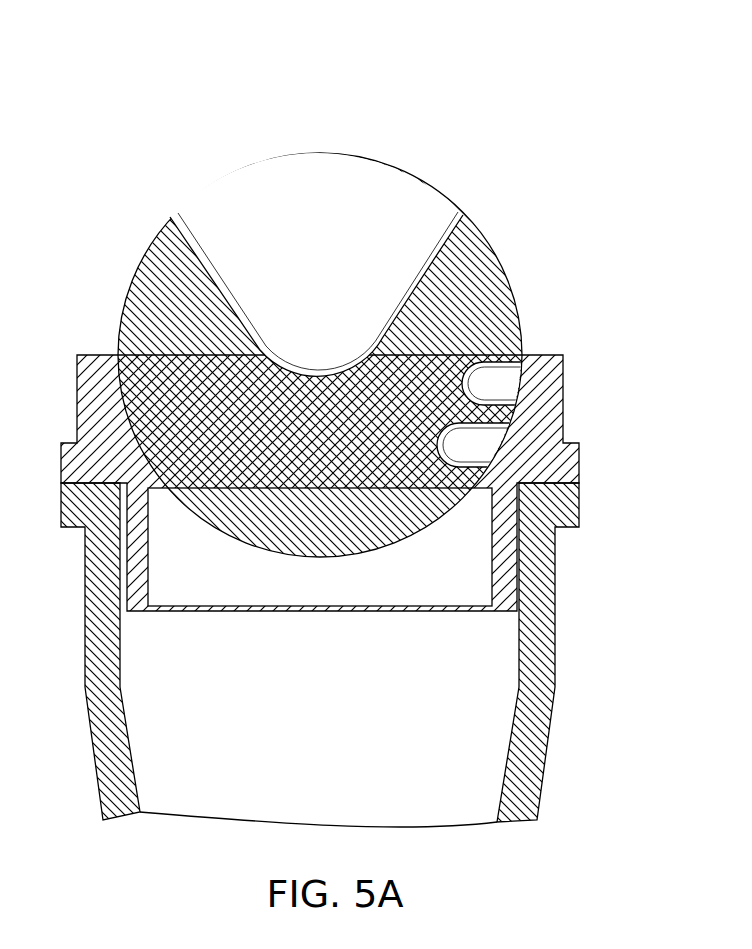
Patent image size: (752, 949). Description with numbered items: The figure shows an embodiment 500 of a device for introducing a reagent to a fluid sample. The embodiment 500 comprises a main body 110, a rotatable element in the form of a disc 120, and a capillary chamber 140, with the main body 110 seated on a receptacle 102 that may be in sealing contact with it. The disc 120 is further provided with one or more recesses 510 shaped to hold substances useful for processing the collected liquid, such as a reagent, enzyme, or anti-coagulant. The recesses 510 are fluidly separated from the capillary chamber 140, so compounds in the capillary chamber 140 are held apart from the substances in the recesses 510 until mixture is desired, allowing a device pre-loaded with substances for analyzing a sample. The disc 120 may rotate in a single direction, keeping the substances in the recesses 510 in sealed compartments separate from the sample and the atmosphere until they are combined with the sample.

The embodiment 500 is at (602, 38).
The receptacle 102 is at (86, 634).
The main body 110 is at (97, 353).
The disc 120 is at (153, 243).
The capillary chamber 140 is at (264, 164).
The recesses 510 is at (508, 450).